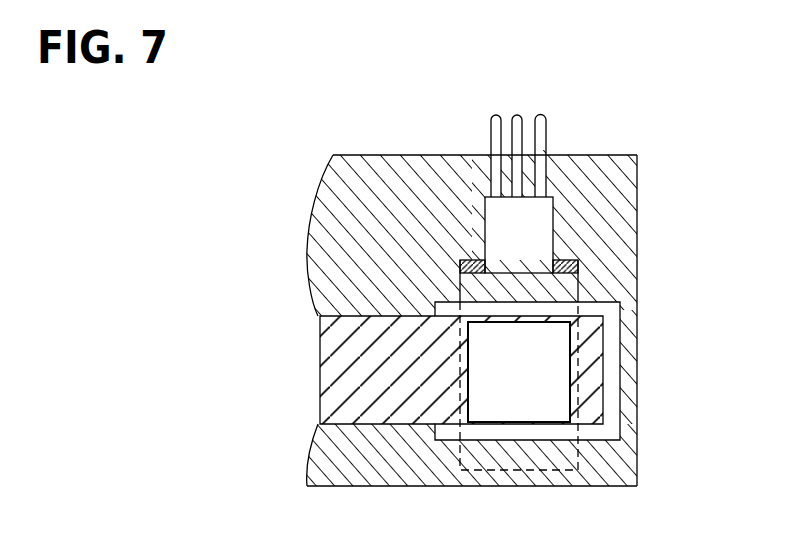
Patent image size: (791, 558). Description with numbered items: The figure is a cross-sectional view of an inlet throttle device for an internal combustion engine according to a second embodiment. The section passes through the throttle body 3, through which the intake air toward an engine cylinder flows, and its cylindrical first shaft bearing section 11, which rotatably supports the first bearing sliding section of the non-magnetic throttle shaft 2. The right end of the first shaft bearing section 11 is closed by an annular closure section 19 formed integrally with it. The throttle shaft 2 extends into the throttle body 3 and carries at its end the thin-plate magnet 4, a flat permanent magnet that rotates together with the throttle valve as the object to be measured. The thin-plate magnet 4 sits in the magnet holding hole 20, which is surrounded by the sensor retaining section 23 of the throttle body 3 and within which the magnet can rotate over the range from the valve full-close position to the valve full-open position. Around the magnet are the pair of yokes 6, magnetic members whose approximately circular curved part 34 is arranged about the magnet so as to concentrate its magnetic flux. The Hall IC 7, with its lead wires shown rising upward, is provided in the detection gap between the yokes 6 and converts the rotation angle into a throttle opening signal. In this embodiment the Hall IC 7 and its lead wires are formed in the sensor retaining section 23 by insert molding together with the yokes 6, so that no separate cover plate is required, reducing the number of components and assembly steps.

The throttle body 3 is at (350, 143).
The sensor retaining section 23 is at (588, 167).
The annular closure section 19 is at (632, 364).
The first shaft bearing section 11 is at (383, 472).
The Hall IC 7 is at (500, 220).
The yokes 6 is at (567, 262).
The magnet holding hole 20 is at (610, 325).
The throttle shaft 2 is at (348, 373).
The thin-plate magnet 4 is at (532, 405).
The curved part 34 is at (590, 389).